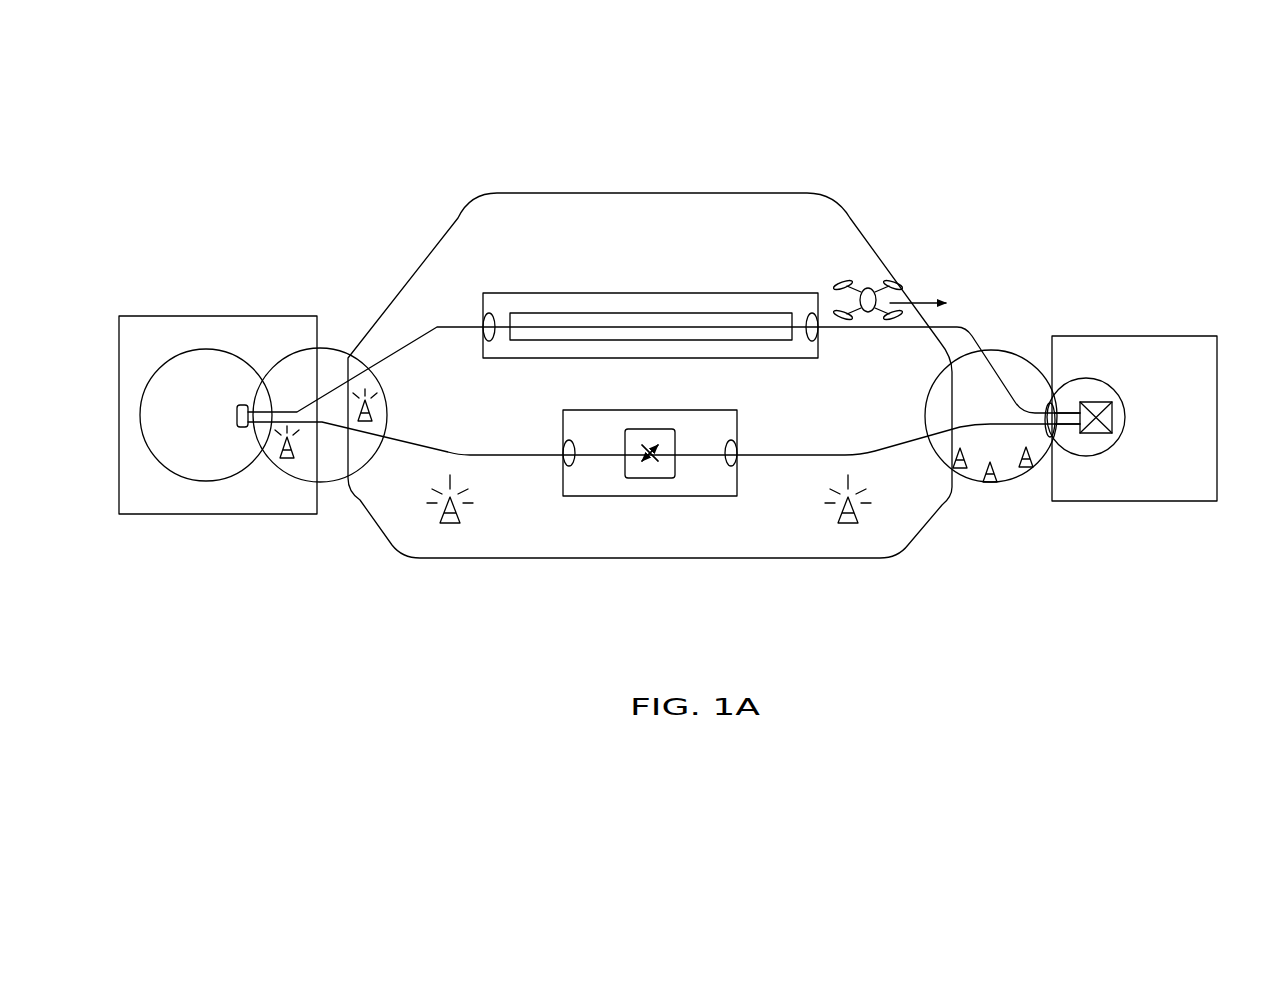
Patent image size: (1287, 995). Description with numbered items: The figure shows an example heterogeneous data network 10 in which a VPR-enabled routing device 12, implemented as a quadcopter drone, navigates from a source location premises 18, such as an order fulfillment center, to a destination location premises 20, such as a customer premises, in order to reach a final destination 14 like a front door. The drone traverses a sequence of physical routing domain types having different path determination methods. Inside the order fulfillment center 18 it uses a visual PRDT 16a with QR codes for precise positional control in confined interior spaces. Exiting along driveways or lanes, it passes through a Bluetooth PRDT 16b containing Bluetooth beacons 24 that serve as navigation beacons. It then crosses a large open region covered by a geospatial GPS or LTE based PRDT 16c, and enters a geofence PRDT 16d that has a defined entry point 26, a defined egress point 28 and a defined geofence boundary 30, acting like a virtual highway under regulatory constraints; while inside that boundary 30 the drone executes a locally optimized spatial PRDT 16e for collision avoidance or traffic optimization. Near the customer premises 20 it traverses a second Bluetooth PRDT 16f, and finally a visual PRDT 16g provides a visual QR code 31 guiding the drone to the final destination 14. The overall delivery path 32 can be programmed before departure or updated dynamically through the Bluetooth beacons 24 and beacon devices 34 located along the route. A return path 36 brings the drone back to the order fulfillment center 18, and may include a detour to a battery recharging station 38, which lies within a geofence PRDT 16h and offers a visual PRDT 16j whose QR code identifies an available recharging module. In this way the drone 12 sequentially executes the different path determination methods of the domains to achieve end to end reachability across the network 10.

The heterogeneous data network 10 is at (372, 128).
The VPR-enabled routing device 12 is at (880, 280).
The final destination 14 is at (1109, 395).
The visual physical routing domain type 16a is at (198, 463).
The Bluetooth PRDT 16b is at (323, 357).
The geospatial-based PRDT 16c is at (815, 203).
The geofence PRDT 16d is at (650, 279).
The locally-optimized spatial PRDT 16e is at (640, 310).
The second Bluetooth PRDT 16f is at (1010, 363).
The visual PRDT 16g is at (1087, 385).
The geofence PRDT 16h is at (670, 485).
The visual PRDT 16j is at (650, 440).
The source location premises 18 is at (152, 316).
The destination location premises 20 is at (1203, 347).
The Bluetooth beacon 24 is at (290, 458).
The entry point 26 is at (487, 347).
The egress point 28 is at (815, 345).
The geofence boundary 30 is at (578, 292).
The visual QR code 31 is at (1097, 435).
The delivery path 32 is at (420, 330).
The beacon device 34 is at (450, 525).
The return path 36 is at (888, 455).
The battery recharging station 38 is at (640, 470).